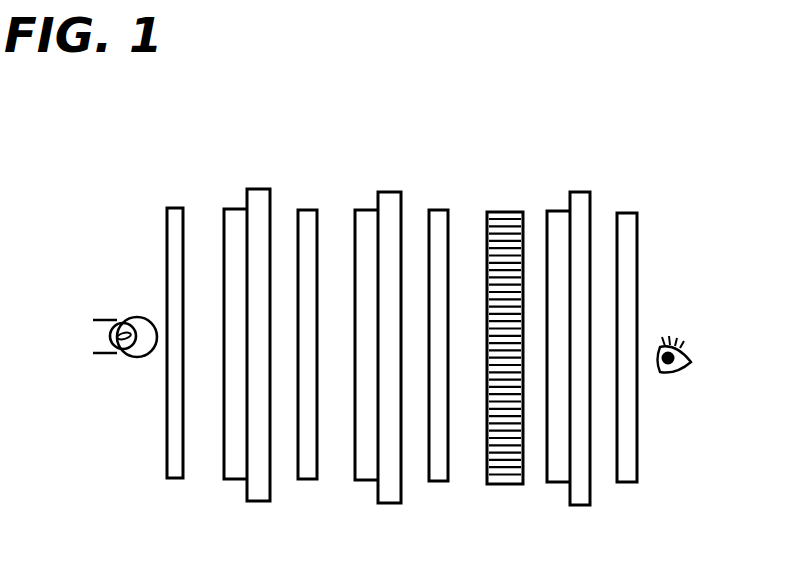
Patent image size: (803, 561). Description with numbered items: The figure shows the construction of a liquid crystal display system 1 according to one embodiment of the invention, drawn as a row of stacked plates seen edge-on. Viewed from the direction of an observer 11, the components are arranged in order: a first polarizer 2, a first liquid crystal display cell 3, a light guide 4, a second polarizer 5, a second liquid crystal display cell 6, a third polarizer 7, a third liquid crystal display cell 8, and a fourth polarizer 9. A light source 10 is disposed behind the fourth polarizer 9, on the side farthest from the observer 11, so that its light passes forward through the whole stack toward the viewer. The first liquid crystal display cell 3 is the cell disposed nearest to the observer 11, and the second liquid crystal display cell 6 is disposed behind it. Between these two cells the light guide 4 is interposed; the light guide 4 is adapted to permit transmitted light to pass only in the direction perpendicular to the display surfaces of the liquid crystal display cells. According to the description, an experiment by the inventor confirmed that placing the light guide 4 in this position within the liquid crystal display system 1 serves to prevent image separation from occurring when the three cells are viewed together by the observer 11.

The liquid crystal display system 1 is at (108, 178).
The first polarizer 2 is at (627, 213).
The first liquid crystal display cell 3 is at (575, 193).
The light guide 4 is at (504, 214).
The second polarizer 5 is at (438, 210).
The second liquid crystal display cell 6 is at (389, 192).
The third polarizer 7 is at (306, 210).
The third liquid crystal display cell 8 is at (258, 192).
The fourth polarizer 9 is at (171, 208).
The light source 10 is at (133, 318).
The observer 11 is at (676, 349).